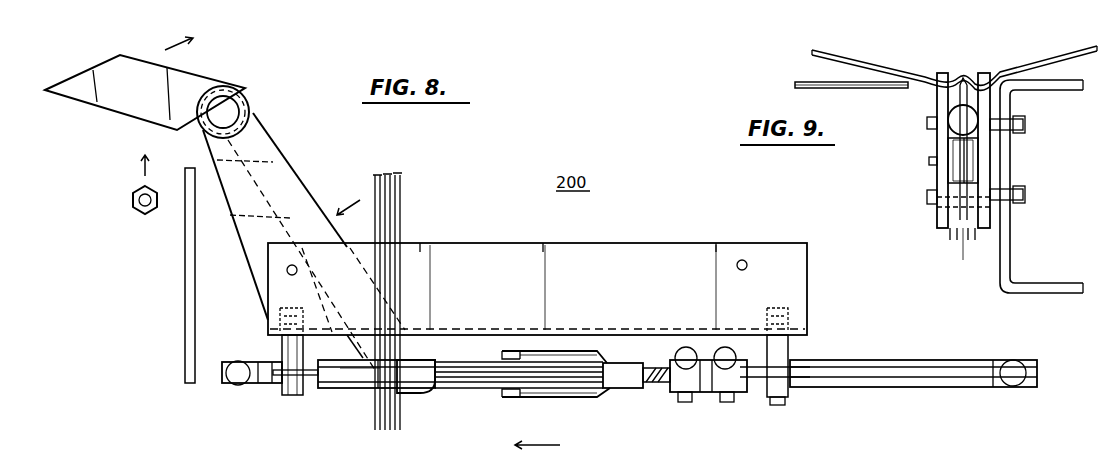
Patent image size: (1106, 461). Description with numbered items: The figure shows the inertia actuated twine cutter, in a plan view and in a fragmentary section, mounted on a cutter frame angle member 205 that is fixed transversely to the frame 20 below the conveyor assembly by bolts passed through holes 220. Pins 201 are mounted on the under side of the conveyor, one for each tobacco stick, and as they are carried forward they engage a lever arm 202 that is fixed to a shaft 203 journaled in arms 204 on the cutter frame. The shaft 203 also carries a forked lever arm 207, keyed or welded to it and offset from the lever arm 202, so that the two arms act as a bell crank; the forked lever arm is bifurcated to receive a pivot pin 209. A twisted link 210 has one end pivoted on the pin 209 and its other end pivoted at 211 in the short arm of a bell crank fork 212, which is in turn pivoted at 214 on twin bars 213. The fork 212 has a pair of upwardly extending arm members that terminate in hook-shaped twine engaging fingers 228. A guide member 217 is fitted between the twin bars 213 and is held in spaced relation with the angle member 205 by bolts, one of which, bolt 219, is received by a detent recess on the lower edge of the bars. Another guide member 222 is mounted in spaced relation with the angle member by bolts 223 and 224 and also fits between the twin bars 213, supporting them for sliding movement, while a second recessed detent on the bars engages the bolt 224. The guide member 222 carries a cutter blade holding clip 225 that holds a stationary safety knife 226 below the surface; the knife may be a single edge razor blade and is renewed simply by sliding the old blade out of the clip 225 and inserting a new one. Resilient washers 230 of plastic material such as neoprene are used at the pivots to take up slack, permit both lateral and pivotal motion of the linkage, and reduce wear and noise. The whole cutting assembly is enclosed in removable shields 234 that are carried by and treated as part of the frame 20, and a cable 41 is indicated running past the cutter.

In FIG. 8, the frame 20 is at (184, 312).
In FIG. 9, the frame 20 is at (1020, 285).
In FIG. 8, the cable 41 is at (377, 428).
In FIG. 9, the cable 41 is at (1055, 60).
In FIG. 8, the pin 201 is at (132, 203).
In FIG. 8, the lever arm 202 is at (120, 108).
In FIG. 8, the shaft 203 is at (228, 110).
In FIG. 8, the arms 204 is at (203, 145).
In FIG. 8, the cutter frame angle member 205 is at (493, 243).
In FIG. 9, the cutter frame angle member 205 is at (1010, 242).
In FIG. 8, the forked lever arm 207 is at (300, 185).
In FIG. 8, the pivot pin 209 is at (406, 395).
In FIG. 8, the twisted link 210 is at (590, 398).
In FIG. 9, the twisted link 210 is at (965, 253).
In FIG. 8, the pivot 211 is at (728, 403).
In FIG. 9, the pivot 211 is at (928, 200).
In FIG. 8, the bell crank fork 212 is at (665, 362).
In FIG. 9, the bell crank fork 212 is at (936, 218).
In FIG. 8, the twin bars 213 is at (230, 388).
In FIG. 9, the twin bars 213 is at (950, 172).
In FIG. 8, the pivot 214 is at (685, 403).
In FIG. 9, the pivot 214 is at (928, 160).
In FIG. 8, the guide member 217 is at (792, 372).
In FIG. 8, the bolt 219 is at (782, 405).
In FIG. 8, the holes 220 is at (287, 272).
In FIG. 9, the holes 220 is at (812, 82).
In FIG. 9, the guide member 222 is at (968, 150).
In FIG. 8, the bolt 223 is at (282, 385).
In FIG. 9, the bolt 223 is at (1022, 124).
In FIG. 9, the bolt 224 is at (1022, 202).
In FIG. 8, the cutter blade holding clip 225 is at (275, 360).
In FIG. 9, the cutter blade holding clip 225 is at (945, 125).
In FIG. 8, the stationary safety knife 226 is at (355, 383).
In FIG. 9, the stationary safety knife 226 is at (958, 98).
In FIG. 8, the twine engaging fingers 228 is at (530, 398).
In FIG. 9, the twine engaging fingers 228 is at (982, 78).
In FIG. 8, the resilient washers 230 is at (225, 362).
In FIG. 9, the resilient washers 230 is at (950, 240).
In FIG. 9, the shields 234 is at (845, 90).